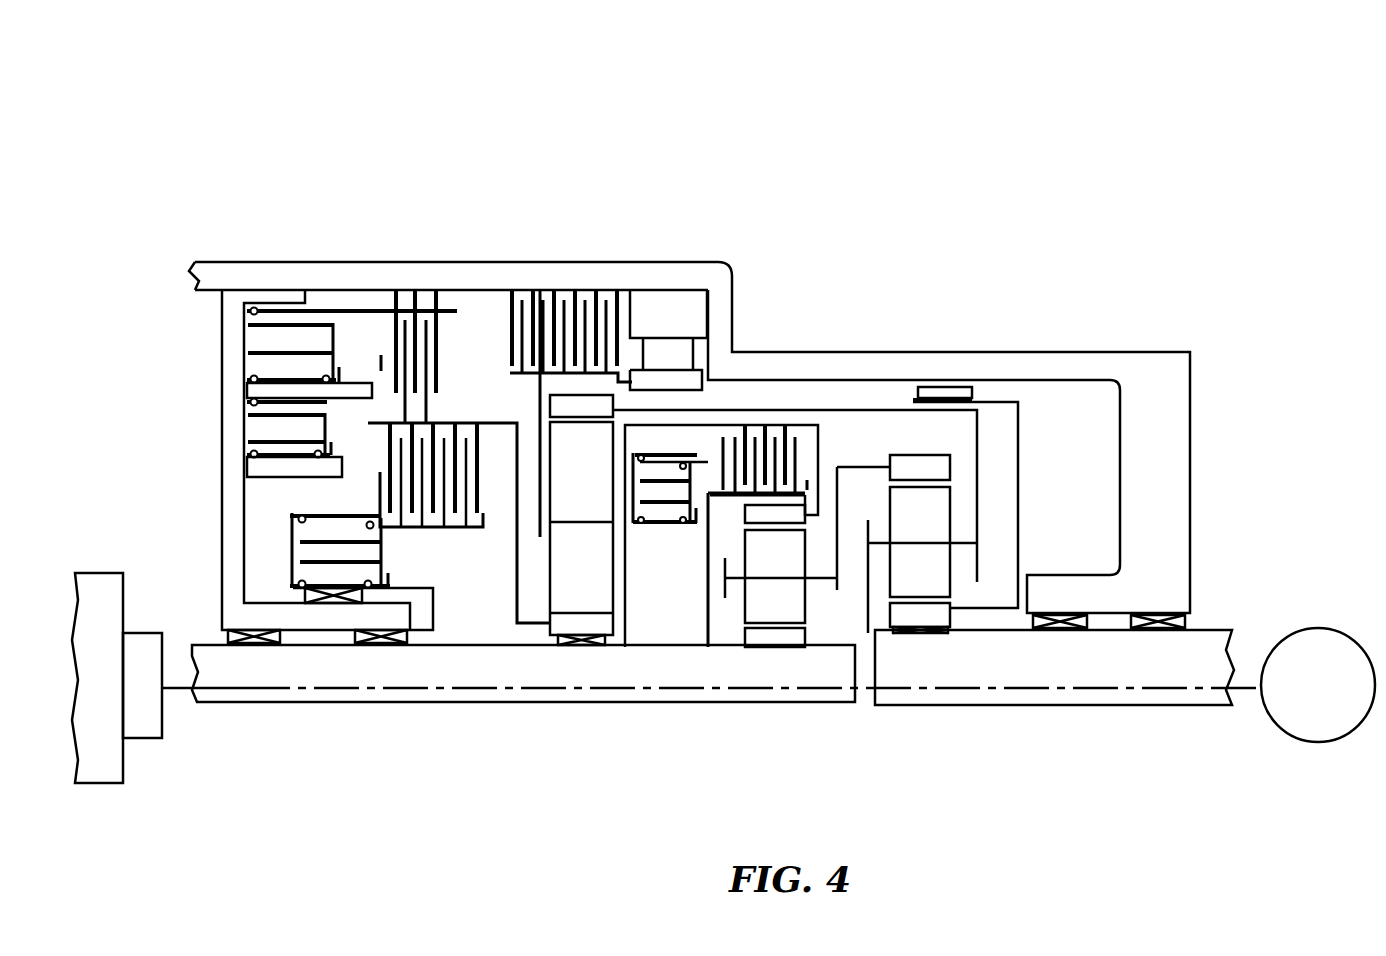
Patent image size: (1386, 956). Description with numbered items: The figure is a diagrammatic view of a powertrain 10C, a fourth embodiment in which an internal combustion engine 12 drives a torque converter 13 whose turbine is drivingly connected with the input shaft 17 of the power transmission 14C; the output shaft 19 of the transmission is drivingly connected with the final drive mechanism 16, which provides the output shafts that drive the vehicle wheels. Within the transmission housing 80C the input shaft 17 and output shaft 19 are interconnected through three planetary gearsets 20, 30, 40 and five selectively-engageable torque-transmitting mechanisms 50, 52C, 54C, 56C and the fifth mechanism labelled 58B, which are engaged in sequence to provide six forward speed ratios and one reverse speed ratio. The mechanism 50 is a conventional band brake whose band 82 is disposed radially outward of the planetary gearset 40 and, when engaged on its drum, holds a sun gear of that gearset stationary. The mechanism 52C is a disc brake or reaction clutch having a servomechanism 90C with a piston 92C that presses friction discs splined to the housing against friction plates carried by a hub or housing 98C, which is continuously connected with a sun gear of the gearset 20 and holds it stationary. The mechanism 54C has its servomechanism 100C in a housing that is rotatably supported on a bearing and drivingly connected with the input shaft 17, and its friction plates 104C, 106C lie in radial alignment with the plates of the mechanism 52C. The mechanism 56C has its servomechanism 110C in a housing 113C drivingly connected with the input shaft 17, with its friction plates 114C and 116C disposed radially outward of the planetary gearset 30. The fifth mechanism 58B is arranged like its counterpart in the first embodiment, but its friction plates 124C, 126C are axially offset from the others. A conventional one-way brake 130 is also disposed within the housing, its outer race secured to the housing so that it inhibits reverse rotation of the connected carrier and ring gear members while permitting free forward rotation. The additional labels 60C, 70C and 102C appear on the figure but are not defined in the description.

The powertrain 10C is at (226, 138).
The internal combustion engine 12 is at (100, 646).
The torque converter 13 is at (155, 653).
The power transmission 14C is at (571, 143).
The final drive mechanism 16 is at (1318, 662).
The input shaft 17 is at (712, 700).
The output shaft 19 is at (1054, 694).
The planetary gearset 20 is at (761, 570).
The planetary gearset 30 is at (807, 603).
The planetary gearset 40 is at (922, 600).
The torque-transmitting mechanism 50 is at (960, 342).
The torque-transmitting mechanism 52C is at (283, 532).
The torque-transmitting mechanism 54C is at (356, 692).
The torque-transmitting mechanism 56C is at (732, 570).
The torque-transmitting mechanism 58B is at (352, 303).
The transmission housing 60C is at (431, 452).
The interconnecting member 70C is at (1125, 490).
The transmission housing 80C is at (844, 305).
The band 82 is at (962, 459).
The servomechanism 90C is at (248, 453).
The piston 92C is at (391, 356).
The hub or housing 98C is at (459, 581).
The servomechanism 100C is at (268, 668).
The interconnecting member 102C is at (339, 500).
The friction plates 104C is at (432, 496).
The friction plates 106C is at (437, 530).
The servomechanism 110C is at (690, 455).
The housing 113C is at (719, 586).
The friction plates 114C is at (780, 411).
The friction plates 116C is at (794, 460).
The friction plates 124C is at (547, 278).
The friction plates 126C is at (571, 377).
The one-way brake 130 is at (669, 307).